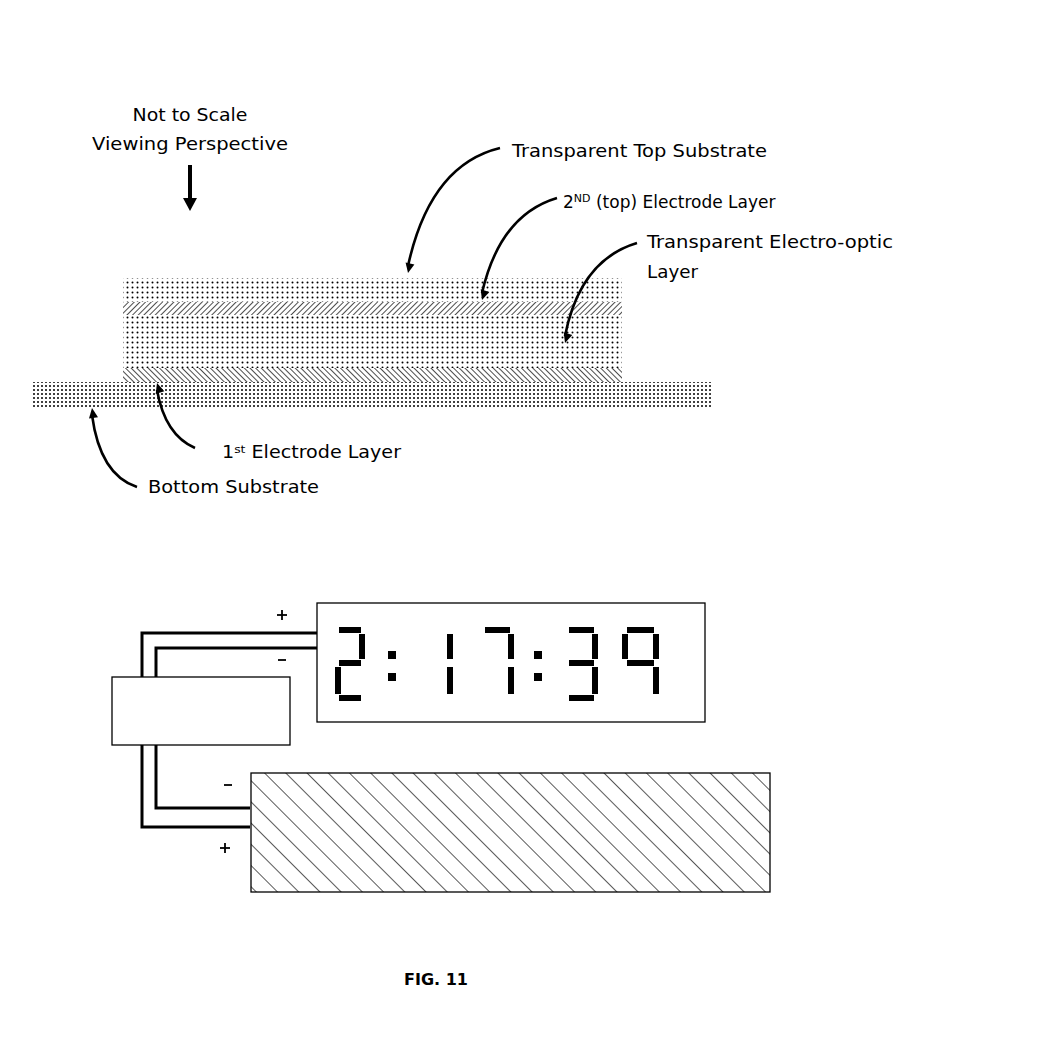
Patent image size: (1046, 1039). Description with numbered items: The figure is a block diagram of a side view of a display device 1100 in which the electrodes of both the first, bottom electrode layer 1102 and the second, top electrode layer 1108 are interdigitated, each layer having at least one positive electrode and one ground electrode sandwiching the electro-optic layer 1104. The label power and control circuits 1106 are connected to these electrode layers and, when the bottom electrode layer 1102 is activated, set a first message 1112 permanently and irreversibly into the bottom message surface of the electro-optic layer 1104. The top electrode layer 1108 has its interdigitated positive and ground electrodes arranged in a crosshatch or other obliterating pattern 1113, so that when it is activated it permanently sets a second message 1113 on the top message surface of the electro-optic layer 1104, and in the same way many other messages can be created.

The electronic label / display assembly 1100 is at (724, 38).
The first (bottom) electrode layer 1102 is at (608, 378).
The electro-optic layer 1104 is at (608, 335).
The label power and control circuits 1106 is at (128, 677).
The second (top) electrode layer 1108 is at (130, 310).
The first message 1112 is at (703, 638).
The second message (crosshatch or obliterating pattern) 1113 is at (658, 775).